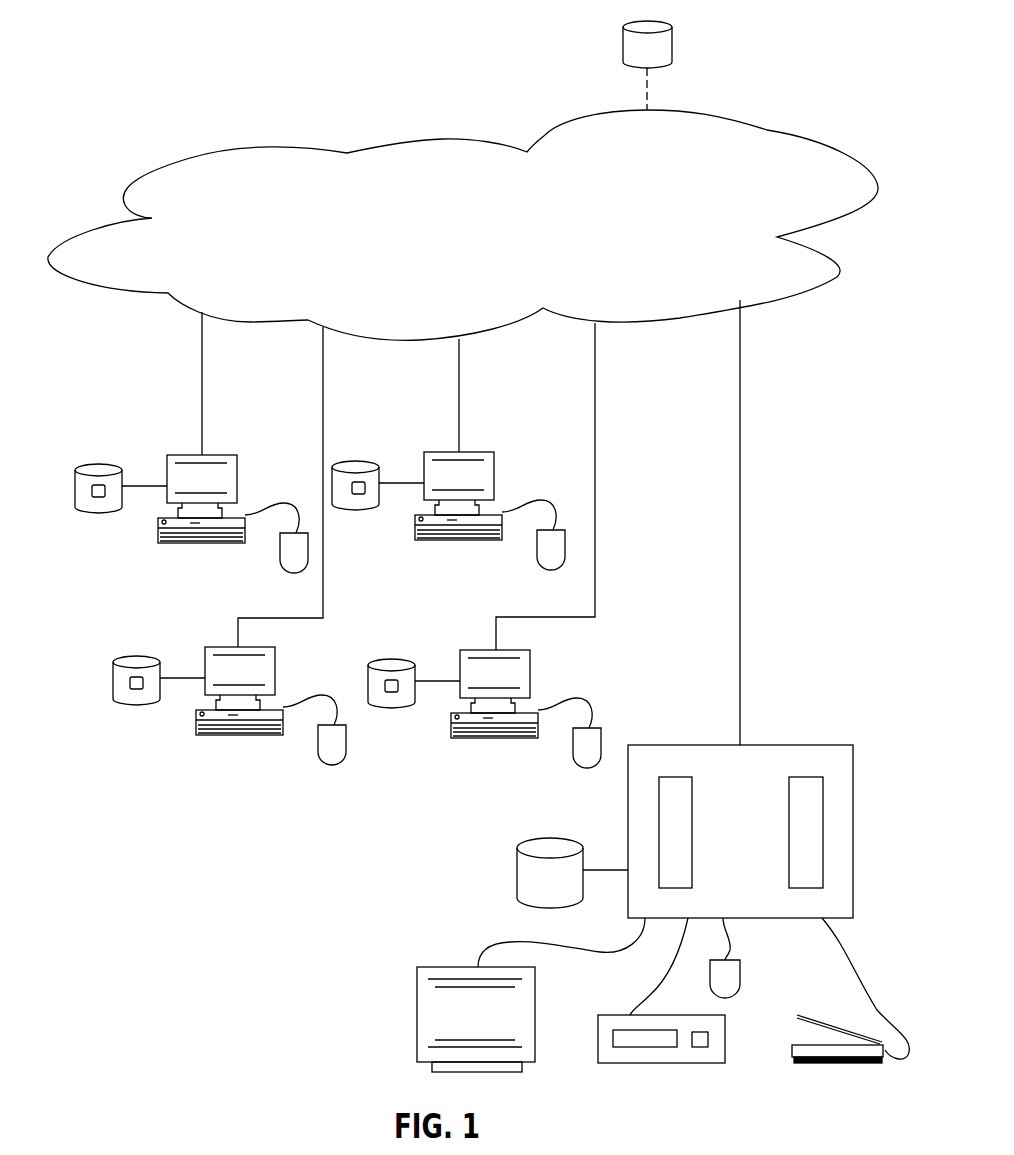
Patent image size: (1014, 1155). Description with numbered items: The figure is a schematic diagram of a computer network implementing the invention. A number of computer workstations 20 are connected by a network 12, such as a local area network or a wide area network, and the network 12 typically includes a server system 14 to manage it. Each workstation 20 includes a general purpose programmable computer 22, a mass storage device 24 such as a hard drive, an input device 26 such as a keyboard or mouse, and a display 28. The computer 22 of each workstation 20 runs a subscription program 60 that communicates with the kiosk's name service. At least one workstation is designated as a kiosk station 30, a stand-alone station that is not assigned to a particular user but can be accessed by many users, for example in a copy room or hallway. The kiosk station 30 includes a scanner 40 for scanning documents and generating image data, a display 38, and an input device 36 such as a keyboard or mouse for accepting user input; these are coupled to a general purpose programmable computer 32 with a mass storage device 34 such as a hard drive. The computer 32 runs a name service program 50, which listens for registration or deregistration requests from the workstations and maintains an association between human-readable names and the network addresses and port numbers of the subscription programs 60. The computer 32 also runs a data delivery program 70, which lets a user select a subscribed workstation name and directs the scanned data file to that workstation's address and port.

The network 12 is at (454, 239).
The server system 14 is at (656, 58).
The computer workstation 20 is at (162, 420).
The general purpose programmable computer 22 is at (213, 453).
The mass storage device 24 is at (98, 508).
The input device 26 is at (202, 543).
The display 28 is at (193, 489).
The kiosk station 30 is at (806, 712).
The general purpose programmable computer 32 is at (853, 828).
The mass storage device 34 is at (517, 870).
The input device 36 is at (663, 1063).
The display 38 is at (466, 1024).
The scanner 40 is at (840, 1063).
The name service program 50 is at (693, 815).
The subscription program 60 is at (98, 485).
The data delivery program 70 is at (789, 837).